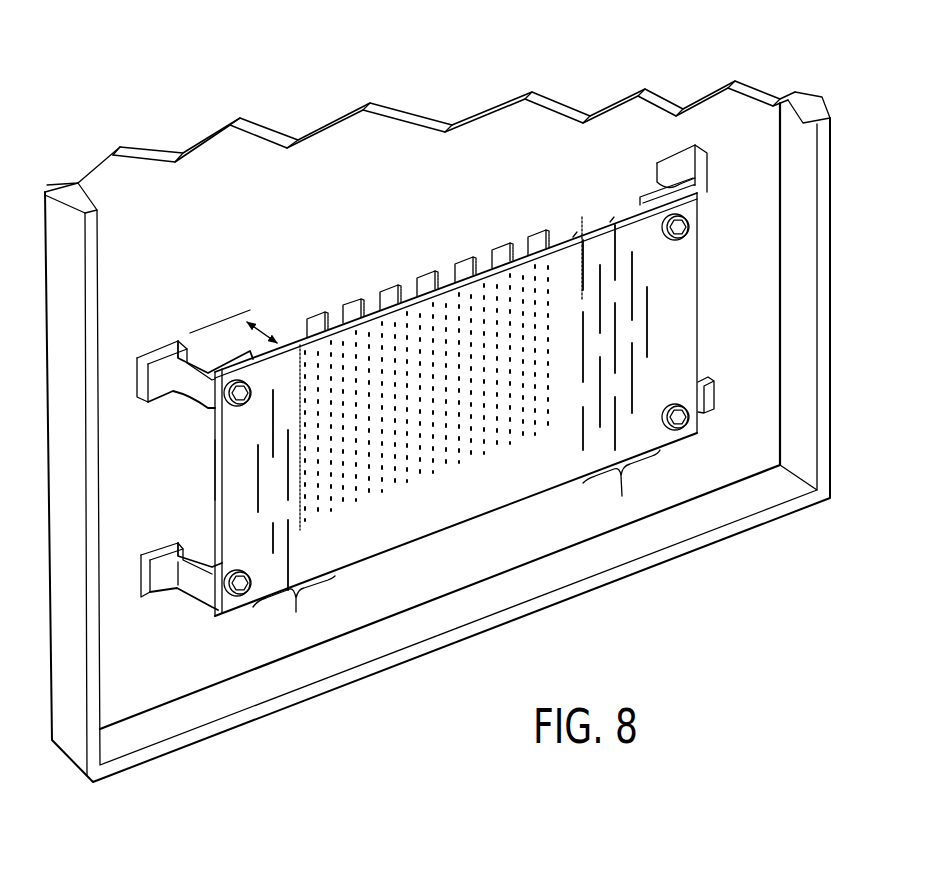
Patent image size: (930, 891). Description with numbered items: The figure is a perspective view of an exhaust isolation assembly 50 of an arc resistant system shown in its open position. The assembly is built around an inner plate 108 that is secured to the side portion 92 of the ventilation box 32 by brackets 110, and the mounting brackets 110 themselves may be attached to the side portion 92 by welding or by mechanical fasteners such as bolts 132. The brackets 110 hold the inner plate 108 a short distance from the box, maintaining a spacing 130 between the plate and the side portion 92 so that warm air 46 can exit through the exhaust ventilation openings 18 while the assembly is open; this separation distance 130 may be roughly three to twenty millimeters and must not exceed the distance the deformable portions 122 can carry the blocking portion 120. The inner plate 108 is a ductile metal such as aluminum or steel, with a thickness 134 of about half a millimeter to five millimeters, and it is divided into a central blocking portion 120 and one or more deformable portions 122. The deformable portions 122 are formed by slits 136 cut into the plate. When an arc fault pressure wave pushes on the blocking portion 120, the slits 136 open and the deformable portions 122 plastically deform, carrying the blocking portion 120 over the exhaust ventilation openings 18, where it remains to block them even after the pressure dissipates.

The ventilation box 32 is at (437, 78).
The exhaust isolation assembly 50 is at (602, 73).
The side portion 92 is at (242, 168).
The warm air 46 is at (505, 230).
The exhaust ventilation openings 18 is at (305, 318).
The spacing 130 is at (248, 335).
The inner plate 108 is at (683, 340).
The thickness 134 is at (248, 490).
The slits 136 is at (273, 533).
The deformable portions 122 is at (456, 548).
The blocking portion 120 is at (582, 482).
The brackets 110 is at (157, 603).
The bolts 132 is at (247, 600).